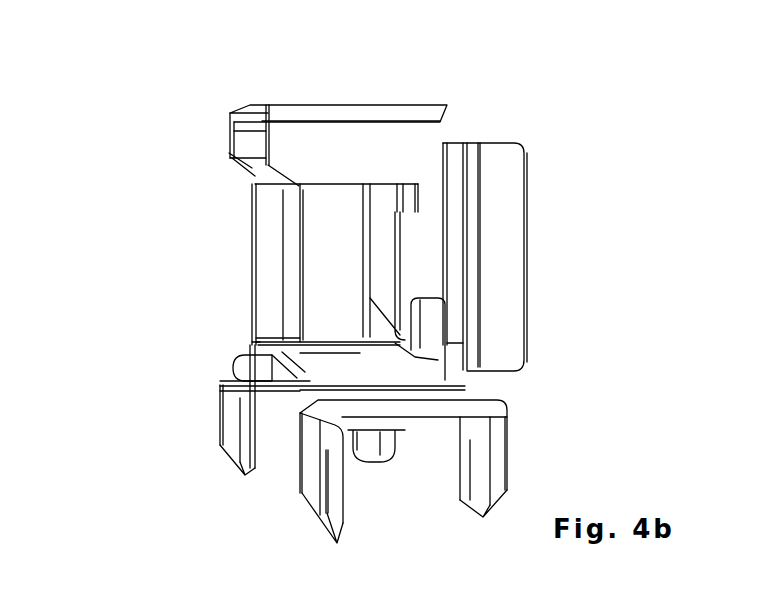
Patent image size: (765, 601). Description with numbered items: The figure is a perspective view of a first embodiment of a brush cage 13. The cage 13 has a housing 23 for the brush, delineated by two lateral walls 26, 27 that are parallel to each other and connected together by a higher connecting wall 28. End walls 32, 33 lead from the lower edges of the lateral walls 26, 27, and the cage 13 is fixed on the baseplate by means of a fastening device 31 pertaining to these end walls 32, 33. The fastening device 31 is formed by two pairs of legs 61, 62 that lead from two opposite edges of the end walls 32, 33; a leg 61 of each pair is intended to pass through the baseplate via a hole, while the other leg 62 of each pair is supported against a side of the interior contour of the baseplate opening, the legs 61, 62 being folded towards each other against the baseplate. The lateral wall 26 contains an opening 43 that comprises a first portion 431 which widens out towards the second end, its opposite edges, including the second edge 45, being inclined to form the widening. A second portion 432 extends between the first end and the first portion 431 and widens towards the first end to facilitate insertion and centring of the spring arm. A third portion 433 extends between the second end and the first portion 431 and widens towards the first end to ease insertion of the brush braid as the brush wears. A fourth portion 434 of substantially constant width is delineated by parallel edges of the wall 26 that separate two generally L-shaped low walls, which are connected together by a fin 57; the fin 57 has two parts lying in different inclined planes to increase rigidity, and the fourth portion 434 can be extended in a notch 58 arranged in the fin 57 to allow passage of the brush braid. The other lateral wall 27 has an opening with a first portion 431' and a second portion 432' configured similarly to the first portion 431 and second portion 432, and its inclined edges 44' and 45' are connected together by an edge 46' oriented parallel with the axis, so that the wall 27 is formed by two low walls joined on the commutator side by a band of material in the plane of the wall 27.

The brush cage 13 is at (150, 106).
The housing 23 is at (236, 162).
The lateral wall 26 is at (428, 212).
The lateral wall 27 is at (229, 339).
The higher connecting wall 28 is at (250, 113).
The fastening device 31 is at (366, 502).
The end wall 32 is at (400, 400).
The end wall 33 is at (199, 372).
The opening 43 is at (288, 251).
The inclined edge 44' is at (185, 264).
The second edge 45 is at (251, 432).
The inclined edge 45' is at (195, 297).
The edge 46' is at (485, 378).
The fin 57 is at (530, 198).
The notch 58 is at (457, 266).
The leg 61 is at (310, 470).
The leg 62 is at (500, 447).
The first portion 431 is at (467, 211).
The first portion 431' is at (321, 121).
The second portion 432 is at (210, 402).
The second portion 432' is at (181, 315).
The third portion 433 is at (415, 206).
The fourth portion 434 is at (452, 322).